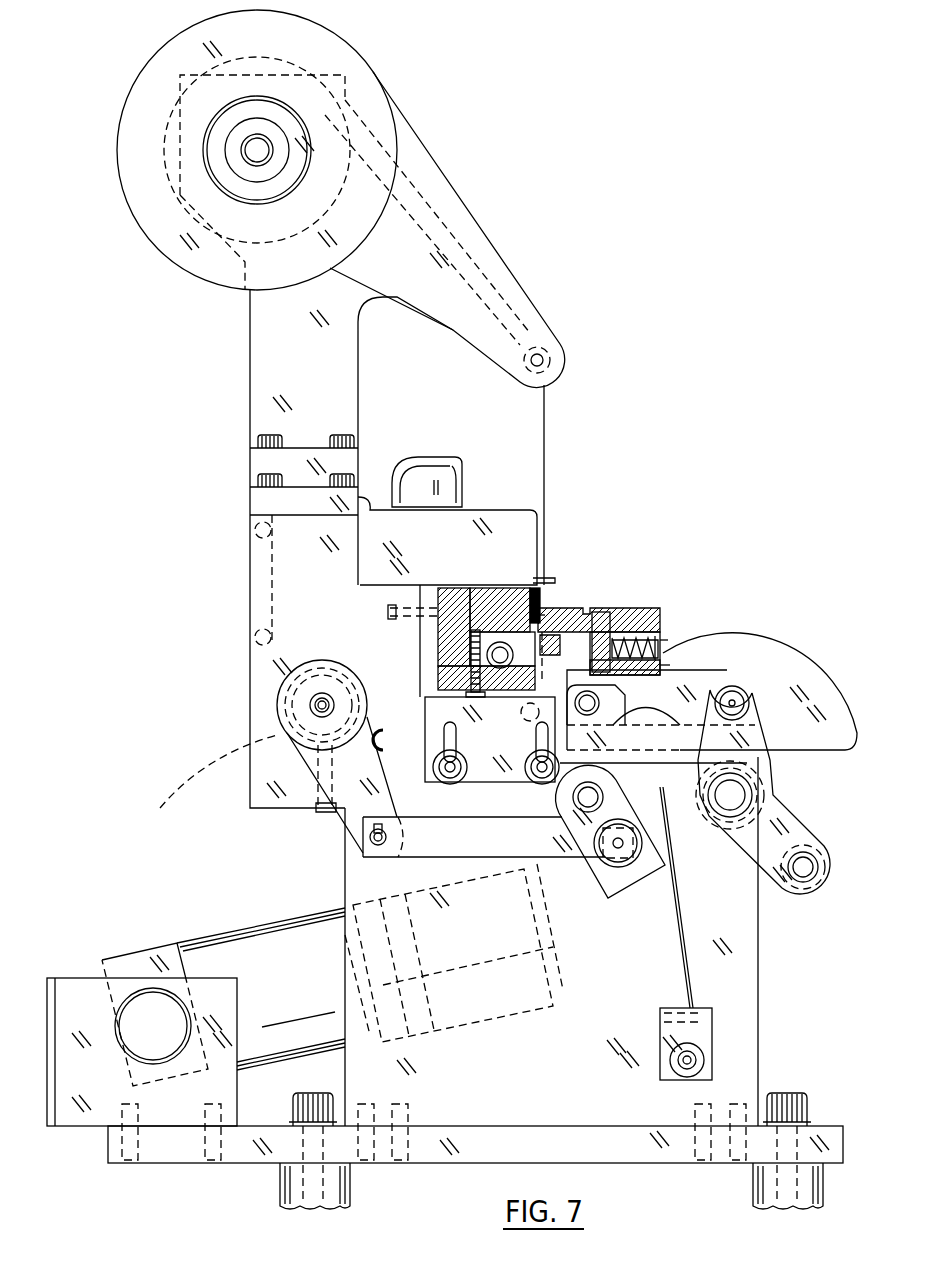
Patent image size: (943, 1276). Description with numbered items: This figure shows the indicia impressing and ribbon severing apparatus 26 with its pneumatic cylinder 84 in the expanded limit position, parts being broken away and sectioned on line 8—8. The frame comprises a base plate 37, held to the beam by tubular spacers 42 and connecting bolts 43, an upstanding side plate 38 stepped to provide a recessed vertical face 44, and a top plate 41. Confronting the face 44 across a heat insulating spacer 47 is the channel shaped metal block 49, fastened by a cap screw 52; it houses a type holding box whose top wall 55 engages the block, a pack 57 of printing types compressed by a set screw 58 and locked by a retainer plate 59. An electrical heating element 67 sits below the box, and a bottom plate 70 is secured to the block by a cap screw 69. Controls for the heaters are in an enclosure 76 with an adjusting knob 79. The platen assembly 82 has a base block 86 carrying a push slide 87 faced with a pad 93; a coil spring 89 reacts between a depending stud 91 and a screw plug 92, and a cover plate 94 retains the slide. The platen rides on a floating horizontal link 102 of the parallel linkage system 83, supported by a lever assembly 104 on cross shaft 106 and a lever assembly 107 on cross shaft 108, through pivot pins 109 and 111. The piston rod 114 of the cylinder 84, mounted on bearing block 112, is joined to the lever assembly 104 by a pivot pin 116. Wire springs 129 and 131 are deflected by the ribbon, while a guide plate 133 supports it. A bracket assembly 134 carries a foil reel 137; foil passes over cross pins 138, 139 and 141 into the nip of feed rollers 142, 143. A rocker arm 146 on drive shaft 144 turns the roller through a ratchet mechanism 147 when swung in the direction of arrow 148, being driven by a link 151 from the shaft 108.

The section line 8- 8 is at (855, 263).
The indicia impressing and ribbon severing apparatus 26 is at (657, 335).
The bracket assembly 134 is at (380, 68).
The reel of coloring foil 137 is at (545, 432).
The cross pin 138 is at (543, 358).
The top plate 41 is at (250, 494).
The rotatable knob 79 is at (432, 465).
The enclosure 76 is at (478, 525).
The ribbon engaging wire spring 131 is at (552, 578).
The horizontally recessed vertical face 44 is at (425, 683).
The spacer 47 is at (428, 595).
The elongated metal block 49 is at (450, 600).
The top wall 55 is at (500, 625).
The set screw 58 is at (533, 597).
The pack of indicia printing types 57 is at (470, 633).
The bottom plate 70 is at (453, 673).
The cap screw 52 is at (390, 610).
The cap screw 69 is at (475, 720).
The electrical heating element 67 is at (516, 722).
The cross pin 139 is at (527, 722).
The ribbon push slide 87 is at (577, 607).
The retainer plate 59 is at (533, 603).
The pad 93 is at (548, 640).
The platen assembly 82 is at (660, 597).
The depending stud 91 is at (603, 620).
The coil spring 89 is at (637, 630).
The cover plate 94 is at (658, 610).
The screw plug 92 is at (667, 640).
The base block 86 is at (660, 667).
The ribbon guide plate 133 is at (805, 675).
The parallel linkage system 83 is at (737, 660).
The pivot pin 111 is at (600, 702).
The lever assembly 107 is at (612, 737).
The floating horizontal link 102 is at (740, 679).
The pivot pin 109 is at (747, 707).
The lever assembly 104 is at (767, 742).
The cross shaft 106 is at (742, 793).
The pivot pin 116 is at (803, 883).
The side plate 38 is at (760, 1027).
The cross shaft 108 is at (575, 797).
The link 151 is at (607, 875).
The ribbon engaging wire spring 129 is at (680, 977).
The piston rod 114 is at (627, 927).
The ratchet mechanism 147 is at (318, 665).
The drive shaft 144 is at (318, 703).
The upper feed roller 143 is at (283, 715).
The lower feed roller 142 is at (297, 767).
The cross pin 141 is at (390, 748).
The rocker arm 146 is at (395, 805).
The arrow 148 is at (362, 848).
The double acting pneumatic cylinder 84 is at (273, 925).
The bearing block 112 is at (84, 950).
The base plate 37 is at (623, 1166).
The connecting bolt 43 is at (307, 1092).
The tubular spacer 42 is at (350, 1188).